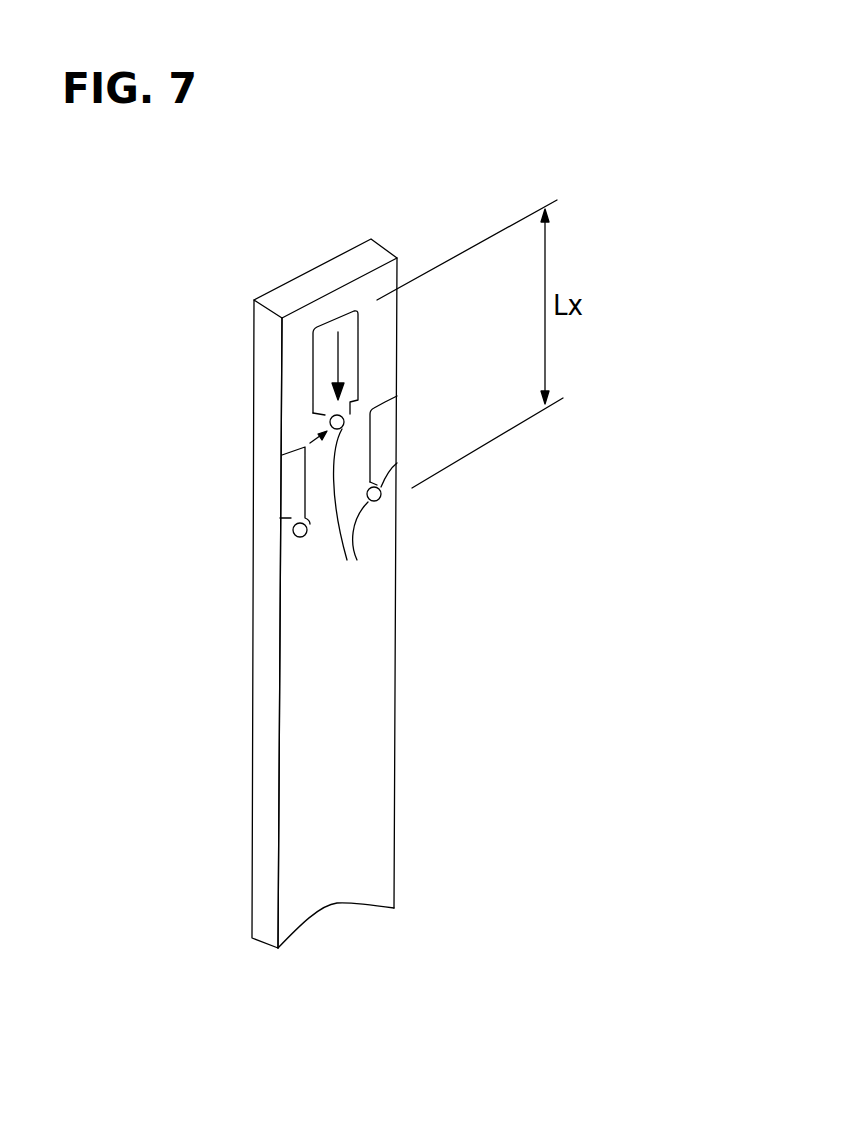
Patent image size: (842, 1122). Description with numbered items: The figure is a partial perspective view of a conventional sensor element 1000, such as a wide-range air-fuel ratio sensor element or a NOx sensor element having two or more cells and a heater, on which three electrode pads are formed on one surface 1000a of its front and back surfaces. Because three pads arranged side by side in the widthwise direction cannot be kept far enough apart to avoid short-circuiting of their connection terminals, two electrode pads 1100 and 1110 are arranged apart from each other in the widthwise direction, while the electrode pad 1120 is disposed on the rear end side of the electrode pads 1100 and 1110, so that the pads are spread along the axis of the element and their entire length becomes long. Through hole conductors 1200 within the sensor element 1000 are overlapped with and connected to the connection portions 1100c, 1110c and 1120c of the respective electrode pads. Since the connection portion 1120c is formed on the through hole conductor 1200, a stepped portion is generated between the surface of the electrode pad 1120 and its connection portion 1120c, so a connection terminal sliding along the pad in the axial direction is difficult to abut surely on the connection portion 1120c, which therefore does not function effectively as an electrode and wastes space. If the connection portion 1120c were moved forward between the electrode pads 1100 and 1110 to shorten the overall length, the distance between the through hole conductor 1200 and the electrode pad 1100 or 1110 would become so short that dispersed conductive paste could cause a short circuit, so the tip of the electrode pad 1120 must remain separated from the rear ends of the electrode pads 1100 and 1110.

The sensor element 1000 is at (425, 123).
The one surface 1000a is at (300, 612).
The electrode pad 1100 is at (290, 490).
The connection portion 1100c is at (294, 536).
The electrode pad 1110 is at (397, 416).
The connection portion 1110c is at (377, 503).
The electrode pad 1120 is at (356, 363).
The connection portion 1120c is at (325, 432).
The through hole conductor 1200 is at (310, 534).